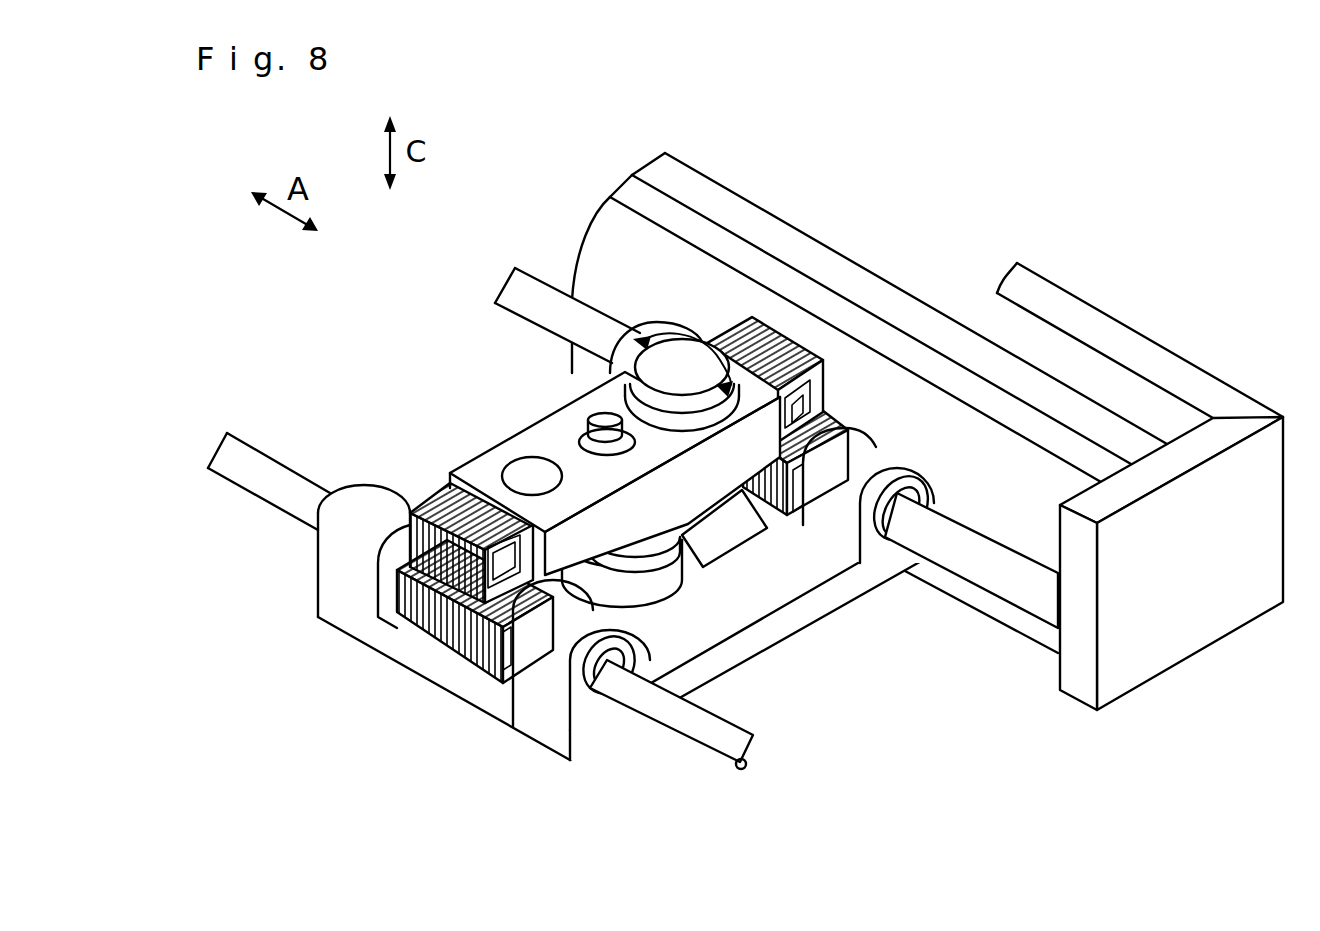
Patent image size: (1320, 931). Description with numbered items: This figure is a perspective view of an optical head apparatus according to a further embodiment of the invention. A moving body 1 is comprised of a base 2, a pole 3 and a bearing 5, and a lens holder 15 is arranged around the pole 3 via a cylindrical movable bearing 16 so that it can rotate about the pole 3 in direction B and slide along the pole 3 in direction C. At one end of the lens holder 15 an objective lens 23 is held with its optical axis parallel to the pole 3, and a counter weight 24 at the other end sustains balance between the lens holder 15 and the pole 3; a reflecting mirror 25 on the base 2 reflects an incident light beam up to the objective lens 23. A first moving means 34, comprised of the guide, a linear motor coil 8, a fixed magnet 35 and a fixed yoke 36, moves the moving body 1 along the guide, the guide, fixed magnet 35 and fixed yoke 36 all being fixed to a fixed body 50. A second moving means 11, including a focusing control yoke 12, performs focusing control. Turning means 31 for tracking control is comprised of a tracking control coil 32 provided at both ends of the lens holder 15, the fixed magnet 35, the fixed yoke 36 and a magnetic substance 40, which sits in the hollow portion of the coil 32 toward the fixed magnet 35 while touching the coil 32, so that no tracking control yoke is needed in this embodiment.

The moving body 1 is at (342, 622).
The base 2 is at (613, 737).
The pole 3 is at (536, 285).
The bearing 5 is at (387, 566).
The linear motor coil 8 is at (473, 660).
The second moving means 11 is at (667, 582).
The focusing control yoke 12 is at (635, 600).
The lens holder 15 is at (585, 433).
The movable bearing 16 is at (598, 430).
The objective lens 23 is at (695, 343).
The counter weight 24 is at (520, 477).
The reflecting mirror 25 is at (800, 545).
The turning means 31 is at (762, 380).
The tracking control coil 32 is at (413, 507).
The first moving means 34 is at (430, 646).
The fixed magnet 35 is at (625, 190).
The fixed yoke 36 is at (655, 165).
The magnetic substance 40 is at (400, 627).
The fixed body 50 is at (1047, 287).